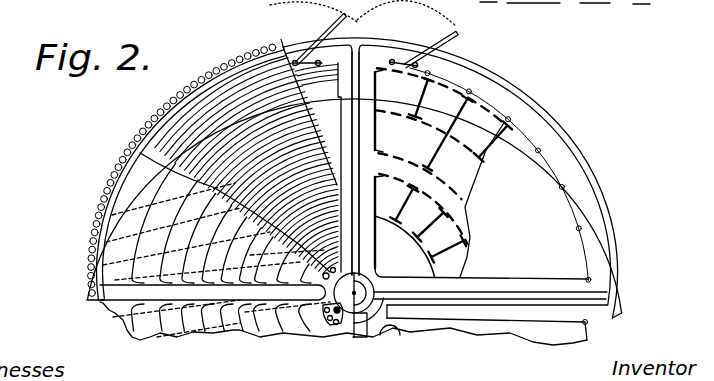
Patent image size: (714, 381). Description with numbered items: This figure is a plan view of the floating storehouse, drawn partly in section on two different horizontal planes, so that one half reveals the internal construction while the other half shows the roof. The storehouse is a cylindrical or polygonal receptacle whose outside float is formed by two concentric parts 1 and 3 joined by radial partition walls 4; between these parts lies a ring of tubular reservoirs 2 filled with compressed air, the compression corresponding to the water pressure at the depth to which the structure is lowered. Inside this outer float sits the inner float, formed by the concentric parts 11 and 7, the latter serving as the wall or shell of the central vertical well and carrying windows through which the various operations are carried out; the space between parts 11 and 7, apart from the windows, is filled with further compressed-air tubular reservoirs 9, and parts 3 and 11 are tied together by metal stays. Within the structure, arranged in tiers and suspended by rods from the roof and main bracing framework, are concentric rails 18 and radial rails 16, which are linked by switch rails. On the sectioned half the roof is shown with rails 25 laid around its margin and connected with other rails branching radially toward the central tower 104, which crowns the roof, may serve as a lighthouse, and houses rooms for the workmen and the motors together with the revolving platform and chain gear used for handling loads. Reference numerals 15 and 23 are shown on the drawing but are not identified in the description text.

The concentric part 1 is at (122, 208).
The tubular reservoirs 2 is at (91, 253).
The concentric part 3 is at (117, 172).
The radial partition walls 4 is at (108, 233).
The concentric part 7 is at (348, 320).
The tubular reservoirs 9 is at (338, 320).
The concentric part 11 is at (322, 318).
The horizontal bar 15 is at (252, 322).
The radial rails 16 is at (226, 330).
The concentric rails 18 is at (165, 330).
The bolts 23 is at (336, 14).
The rails 25 is at (390, 45).
The tower 104 is at (362, 318).